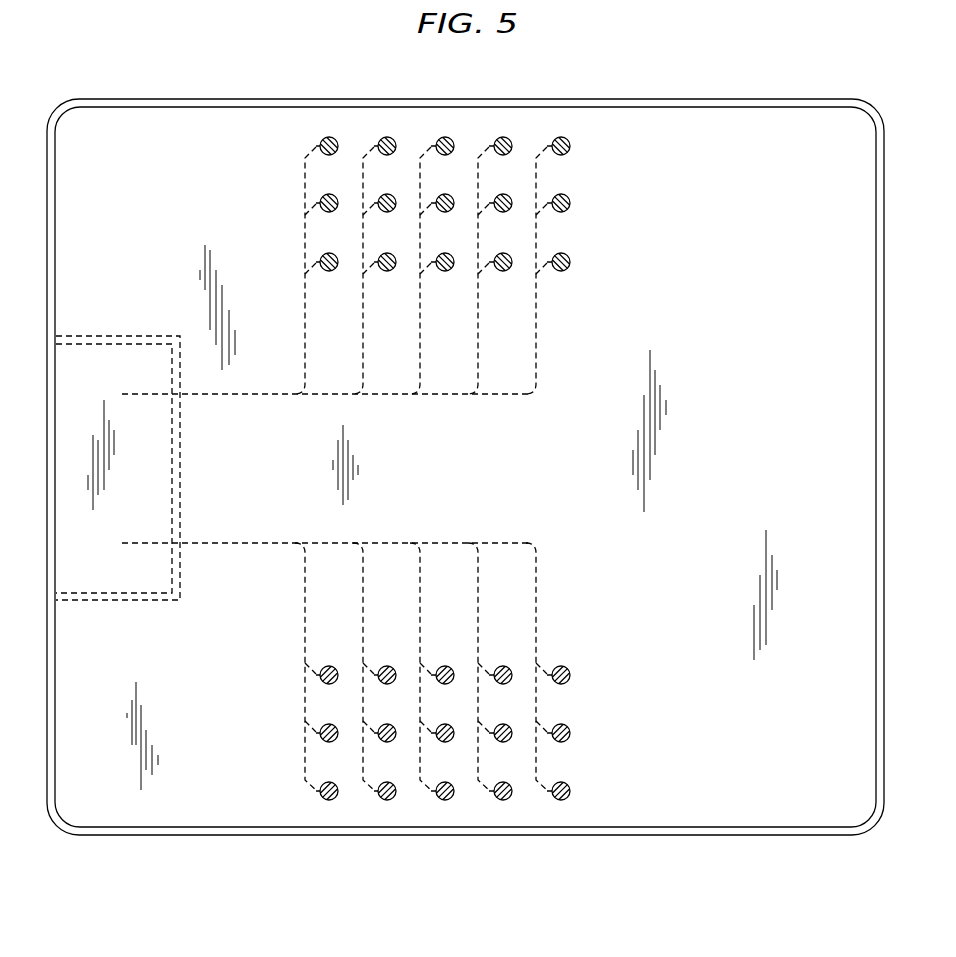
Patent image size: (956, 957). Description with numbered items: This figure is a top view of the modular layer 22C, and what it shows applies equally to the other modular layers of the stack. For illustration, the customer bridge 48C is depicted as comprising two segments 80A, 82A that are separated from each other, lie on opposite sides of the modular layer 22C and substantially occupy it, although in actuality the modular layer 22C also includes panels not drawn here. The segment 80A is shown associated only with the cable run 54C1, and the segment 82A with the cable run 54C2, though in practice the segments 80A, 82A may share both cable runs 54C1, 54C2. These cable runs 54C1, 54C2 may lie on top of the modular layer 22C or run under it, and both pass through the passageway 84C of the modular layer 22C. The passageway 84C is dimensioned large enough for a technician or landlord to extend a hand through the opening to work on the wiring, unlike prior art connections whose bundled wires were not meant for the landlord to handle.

The modular layer 22C is at (754, 99).
The customer bridge 48C is at (608, 230).
The segment 80A is at (290, 230).
The segment 82A is at (290, 707).
The passageway 84C is at (106, 336).
The cable run 54C1 is at (229, 397).
The cable run 54C2 is at (229, 546).